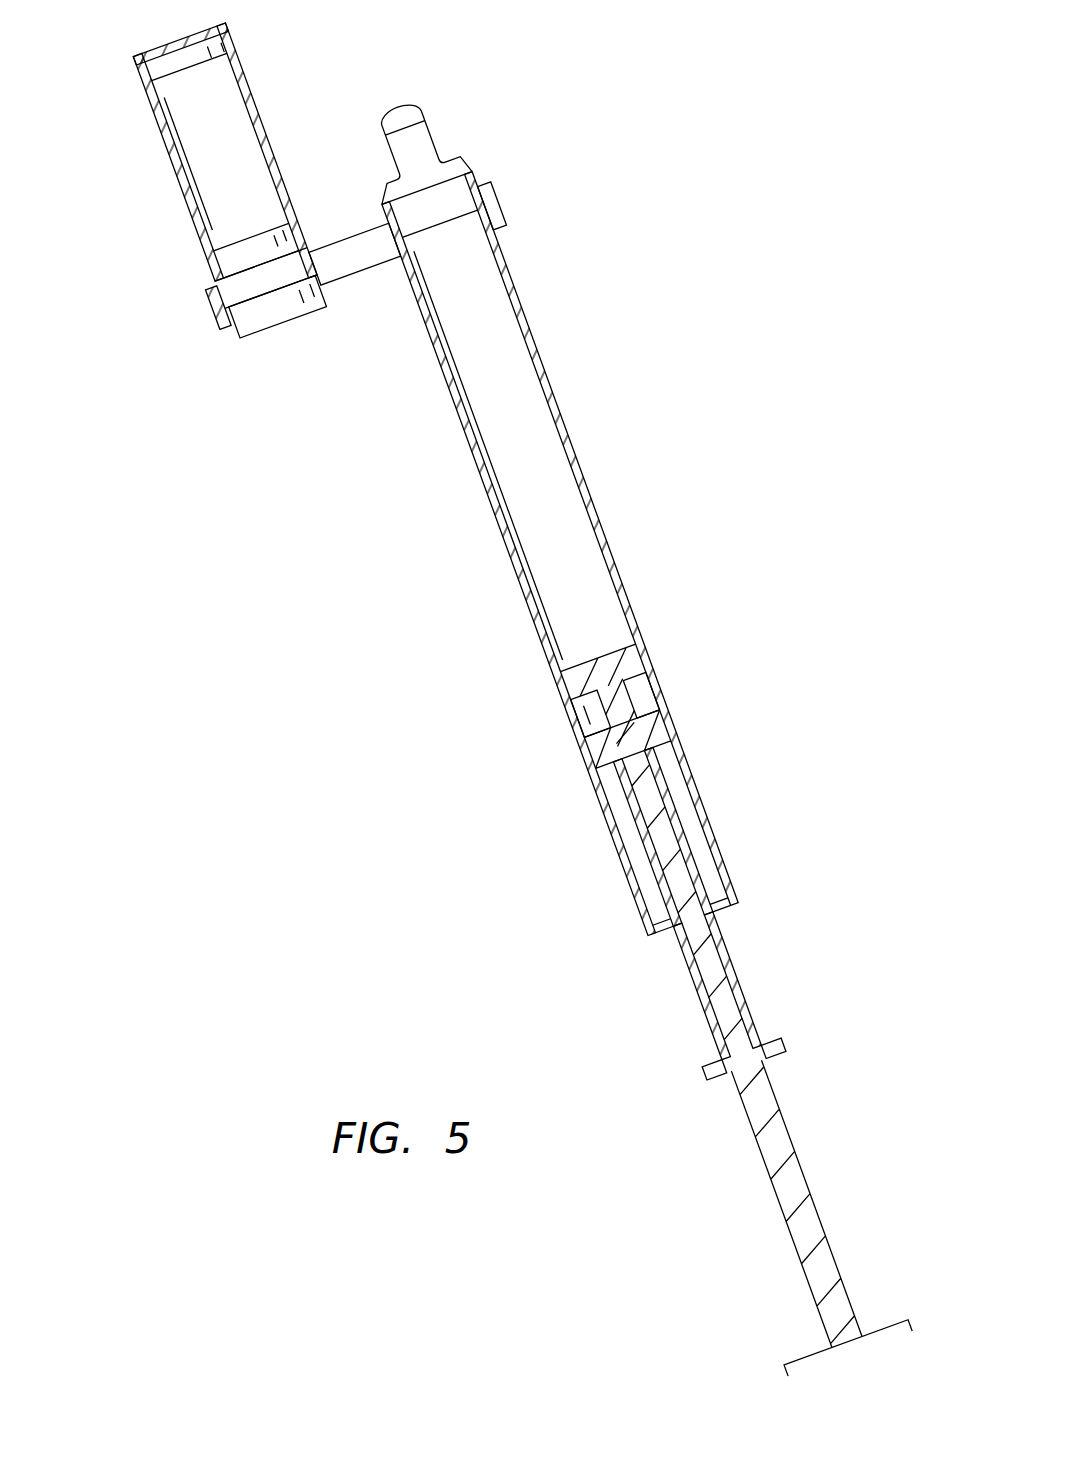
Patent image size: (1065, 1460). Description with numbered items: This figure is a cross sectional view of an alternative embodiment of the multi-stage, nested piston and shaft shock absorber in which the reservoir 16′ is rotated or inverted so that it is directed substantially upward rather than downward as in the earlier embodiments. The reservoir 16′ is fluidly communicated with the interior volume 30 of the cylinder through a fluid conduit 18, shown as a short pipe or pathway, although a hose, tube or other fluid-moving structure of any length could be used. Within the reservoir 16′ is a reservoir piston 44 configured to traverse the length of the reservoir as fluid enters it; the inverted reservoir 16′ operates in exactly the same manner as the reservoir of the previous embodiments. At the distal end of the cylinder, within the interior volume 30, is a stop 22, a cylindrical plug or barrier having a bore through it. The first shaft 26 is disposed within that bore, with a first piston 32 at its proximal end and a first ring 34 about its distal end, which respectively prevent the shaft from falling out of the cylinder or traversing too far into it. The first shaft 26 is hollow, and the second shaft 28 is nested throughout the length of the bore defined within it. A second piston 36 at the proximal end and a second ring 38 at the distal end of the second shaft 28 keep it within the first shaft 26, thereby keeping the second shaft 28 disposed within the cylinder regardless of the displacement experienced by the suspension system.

The reservoir 16′ is at (190, 197).
The fluid conduit 18 is at (348, 250).
The stop 22 is at (632, 857).
The first shaft 26 is at (673, 820).
The second shaft 28 is at (715, 968).
The interior volume 30 is at (535, 433).
The first piston 32 is at (583, 752).
The first ring 34 is at (770, 1047).
The second piston 36 is at (617, 667).
The second ring 38 is at (889, 1337).
The reservoir piston 44 is at (245, 250).